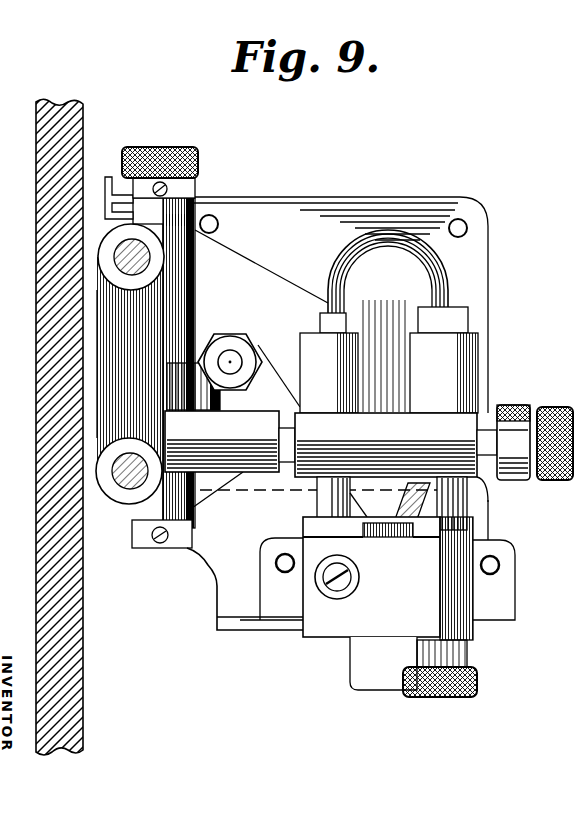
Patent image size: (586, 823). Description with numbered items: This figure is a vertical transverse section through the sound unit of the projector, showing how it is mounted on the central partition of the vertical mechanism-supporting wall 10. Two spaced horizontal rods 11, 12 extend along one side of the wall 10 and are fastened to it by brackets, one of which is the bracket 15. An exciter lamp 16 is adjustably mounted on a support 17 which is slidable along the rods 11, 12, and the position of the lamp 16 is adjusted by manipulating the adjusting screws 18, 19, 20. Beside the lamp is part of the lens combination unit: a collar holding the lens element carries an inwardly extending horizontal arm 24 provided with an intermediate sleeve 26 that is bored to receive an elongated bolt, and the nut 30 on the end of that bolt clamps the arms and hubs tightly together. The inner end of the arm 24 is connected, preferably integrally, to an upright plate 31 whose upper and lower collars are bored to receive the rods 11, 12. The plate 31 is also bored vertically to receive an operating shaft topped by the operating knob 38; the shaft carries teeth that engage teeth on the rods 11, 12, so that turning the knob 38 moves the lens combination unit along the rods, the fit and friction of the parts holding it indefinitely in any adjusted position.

The mechanism-supporting wall 10 is at (43, 271).
The rod 11 is at (105, 279).
The rod 12 is at (160, 450).
The bracket 15 is at (100, 175).
The exciter lamp 16 is at (372, 268).
The support 17 is at (120, 387).
The adjusting screw 18 is at (560, 408).
The adjusting screw 19 is at (520, 399).
The adjusting screw 20 is at (480, 681).
The horizontal arm 24 is at (318, 326).
The sleeve 26 is at (226, 338).
The nut 30 is at (228, 350).
The upright plate 31 is at (172, 222).
The operating knob 38 is at (168, 150).